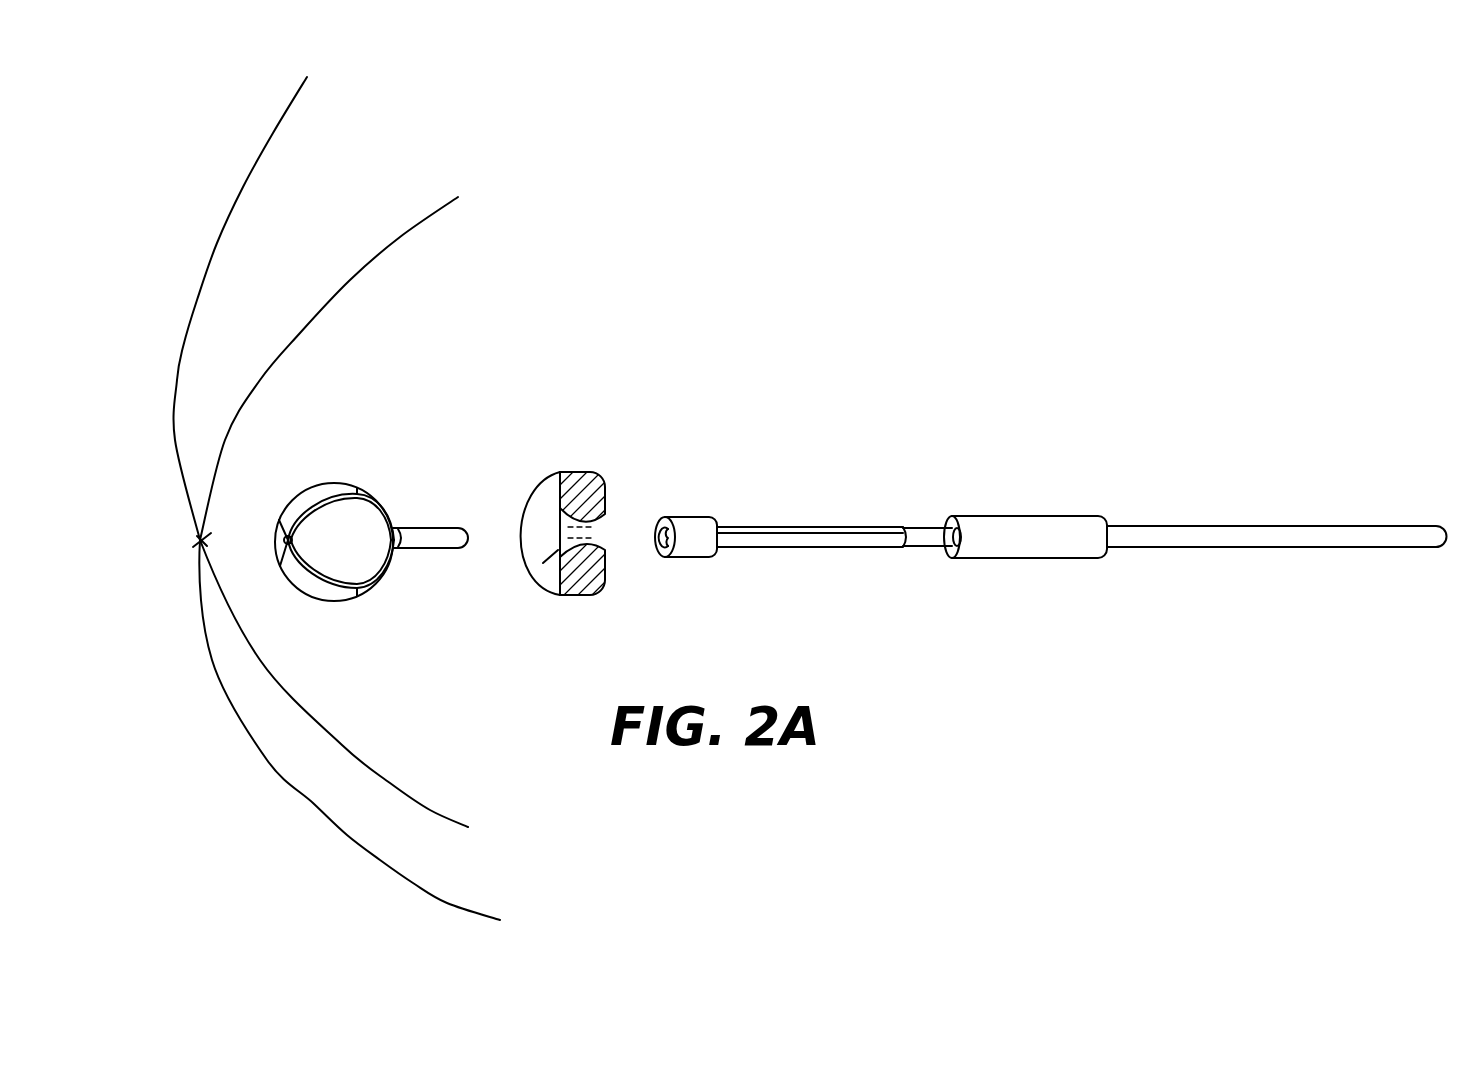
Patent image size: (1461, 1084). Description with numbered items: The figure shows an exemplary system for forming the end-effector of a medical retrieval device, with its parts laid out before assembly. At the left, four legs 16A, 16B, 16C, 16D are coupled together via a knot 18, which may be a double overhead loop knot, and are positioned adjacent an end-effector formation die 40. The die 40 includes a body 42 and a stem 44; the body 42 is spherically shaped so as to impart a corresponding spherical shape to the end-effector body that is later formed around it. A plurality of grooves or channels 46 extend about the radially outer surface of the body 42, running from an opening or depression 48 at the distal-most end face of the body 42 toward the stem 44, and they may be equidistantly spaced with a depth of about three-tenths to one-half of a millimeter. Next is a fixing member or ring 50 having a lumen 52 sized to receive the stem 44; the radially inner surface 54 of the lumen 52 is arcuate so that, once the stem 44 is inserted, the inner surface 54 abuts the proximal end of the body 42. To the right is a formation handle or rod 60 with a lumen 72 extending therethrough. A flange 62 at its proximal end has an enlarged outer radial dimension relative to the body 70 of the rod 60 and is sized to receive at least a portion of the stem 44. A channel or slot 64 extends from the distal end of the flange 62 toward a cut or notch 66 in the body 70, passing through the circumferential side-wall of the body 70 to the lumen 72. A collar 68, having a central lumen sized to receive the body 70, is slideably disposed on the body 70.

The leg 16A is at (176, 393).
The leg 16B is at (330, 295).
The leg 16C is at (342, 746).
The leg 16D is at (267, 762).
The knot 18 is at (200, 541).
The end-effector formation die 40 is at (349, 523).
The body 42 is at (320, 483).
The stem 44 is at (432, 526).
The channels 46 is at (357, 489).
The depression 48 is at (284, 540).
The ring 50 is at (570, 485).
The lumen 52 is at (603, 525).
The inner surface 54 is at (543, 563).
The rod 60 is at (1033, 476).
The flange 62 is at (697, 556).
The slot 64 is at (682, 517).
The notch 66 is at (905, 530).
The collar 68 is at (1045, 520).
The body 70 is at (1338, 527).
The lumen 72 is at (657, 542).